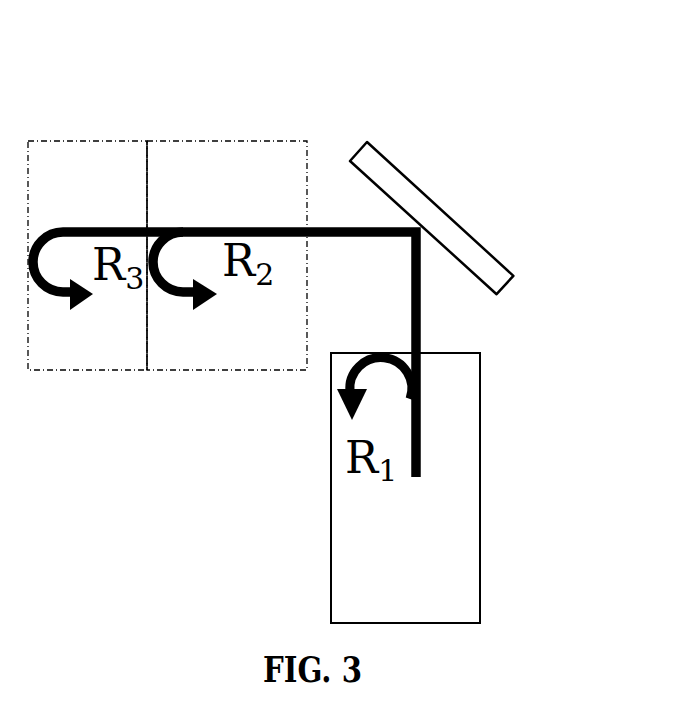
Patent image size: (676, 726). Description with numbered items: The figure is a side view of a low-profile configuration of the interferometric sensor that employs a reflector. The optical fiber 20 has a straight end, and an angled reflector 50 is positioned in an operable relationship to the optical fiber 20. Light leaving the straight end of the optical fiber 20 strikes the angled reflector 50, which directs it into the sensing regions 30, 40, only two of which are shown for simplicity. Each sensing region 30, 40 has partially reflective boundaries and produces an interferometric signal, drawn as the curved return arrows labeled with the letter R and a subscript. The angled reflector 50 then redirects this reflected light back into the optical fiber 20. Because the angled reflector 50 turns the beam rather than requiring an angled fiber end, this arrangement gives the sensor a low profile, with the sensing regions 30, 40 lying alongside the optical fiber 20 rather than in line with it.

The optical fiber 20 is at (442, 475).
The sensing region 30 is at (212, 182).
The sensing region 40 is at (89, 182).
The angled reflector 50 is at (482, 253).